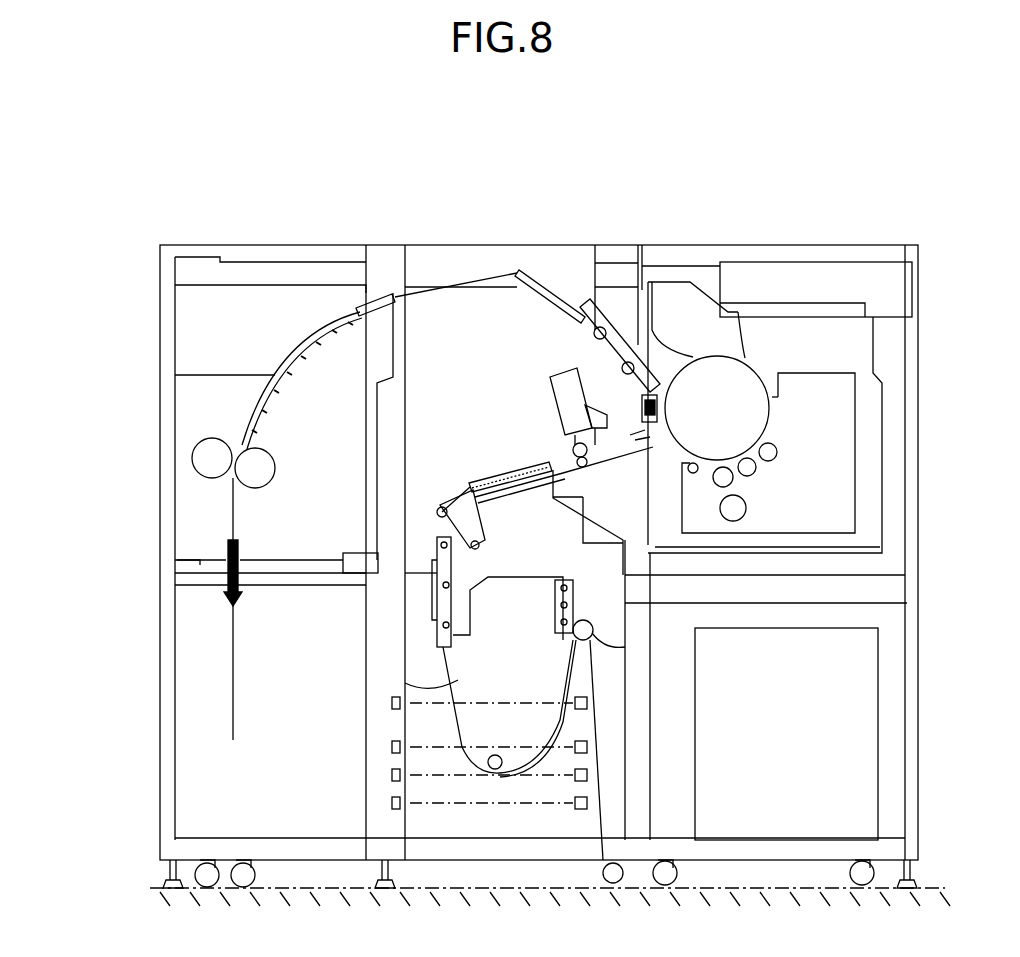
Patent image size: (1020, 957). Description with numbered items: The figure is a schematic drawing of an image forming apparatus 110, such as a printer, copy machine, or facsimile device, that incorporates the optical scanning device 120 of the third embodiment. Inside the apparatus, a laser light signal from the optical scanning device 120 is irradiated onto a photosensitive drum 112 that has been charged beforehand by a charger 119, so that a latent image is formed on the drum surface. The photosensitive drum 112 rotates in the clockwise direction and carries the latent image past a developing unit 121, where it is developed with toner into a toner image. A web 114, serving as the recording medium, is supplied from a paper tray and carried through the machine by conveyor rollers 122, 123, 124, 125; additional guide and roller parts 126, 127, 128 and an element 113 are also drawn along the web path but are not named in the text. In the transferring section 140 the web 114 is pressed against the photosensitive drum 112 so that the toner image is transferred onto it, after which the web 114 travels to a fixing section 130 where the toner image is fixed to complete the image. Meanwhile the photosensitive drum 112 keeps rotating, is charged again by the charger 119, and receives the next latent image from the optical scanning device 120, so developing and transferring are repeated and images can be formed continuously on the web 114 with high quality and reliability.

The image forming apparatus 110 is at (348, 137).
The photosensitive drum 112 is at (680, 345).
The arm 113 is at (642, 400).
The web 114 is at (455, 697).
The charger 119 is at (745, 358).
The optical scanning device 120 is at (835, 280).
The developing unit 121 is at (766, 474).
The conveyor roller 122 is at (593, 633).
The conveyor roller 123 is at (438, 508).
The conveyor roller 124 is at (557, 427).
The conveyor roller 125 is at (589, 316).
The curved guide 126 is at (287, 360).
The feed roller 127 is at (193, 448).
The pinch roller 128 is at (272, 478).
The fixing section 130 is at (222, 405).
The transferring section 140 is at (658, 450).